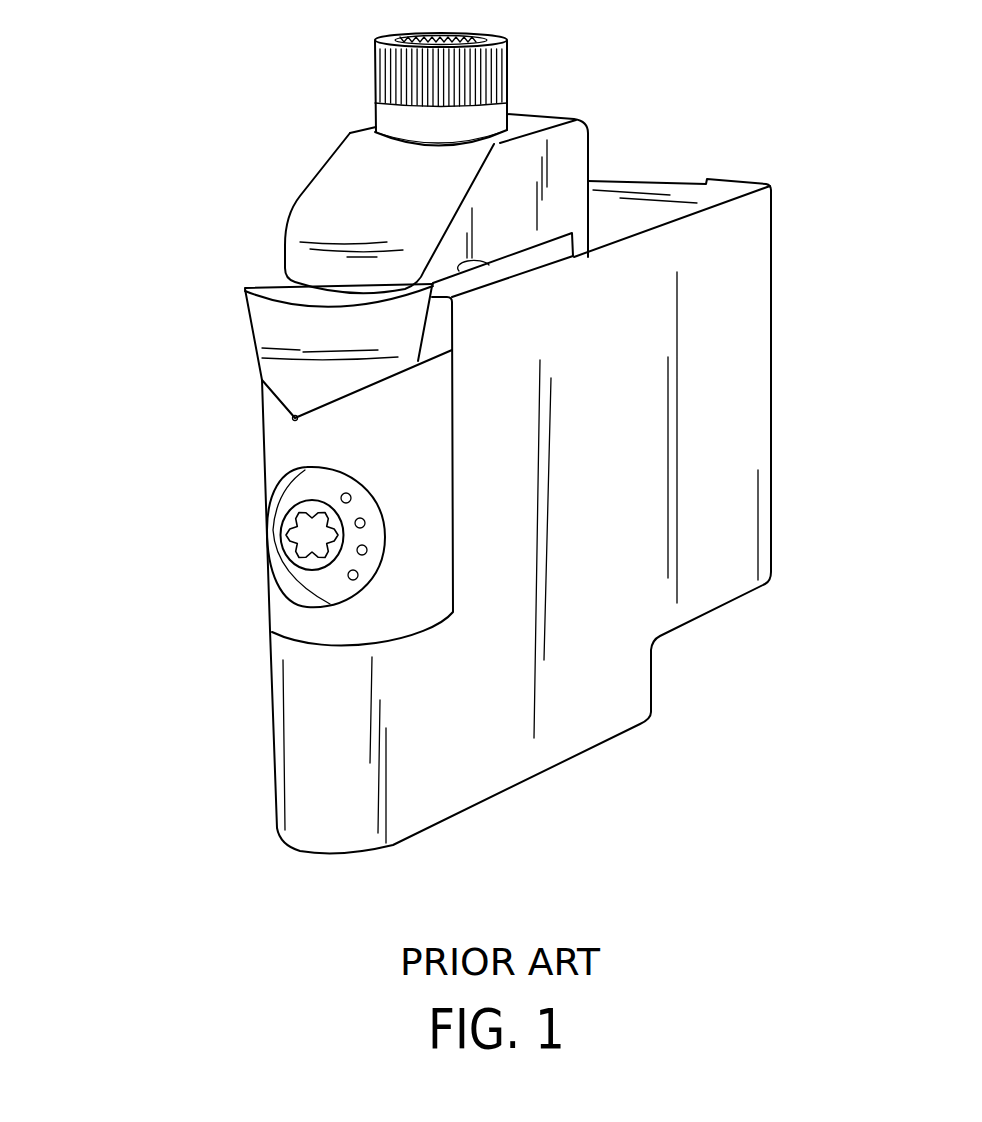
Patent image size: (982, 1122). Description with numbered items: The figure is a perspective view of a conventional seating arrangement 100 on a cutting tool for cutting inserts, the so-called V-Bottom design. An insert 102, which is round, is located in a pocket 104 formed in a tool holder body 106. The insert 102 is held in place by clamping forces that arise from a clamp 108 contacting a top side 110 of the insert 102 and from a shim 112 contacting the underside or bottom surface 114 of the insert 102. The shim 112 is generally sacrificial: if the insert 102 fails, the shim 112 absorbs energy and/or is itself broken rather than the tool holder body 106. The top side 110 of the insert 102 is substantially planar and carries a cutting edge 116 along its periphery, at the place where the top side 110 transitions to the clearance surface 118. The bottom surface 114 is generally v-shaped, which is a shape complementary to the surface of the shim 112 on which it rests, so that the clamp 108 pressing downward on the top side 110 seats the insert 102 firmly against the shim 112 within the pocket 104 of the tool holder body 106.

The seating arrangement 100 is at (760, 104).
The insert 102 is at (227, 366).
The pocket 104 is at (432, 341).
The tool holder body 106 is at (713, 387).
The clamp 108 is at (347, 180).
The top side 110 is at (263, 282).
The shim 112 is at (297, 448).
The bottom surface 114 is at (274, 418).
The cutting edge 116 is at (244, 289).
The clearance surface 118 is at (272, 331).